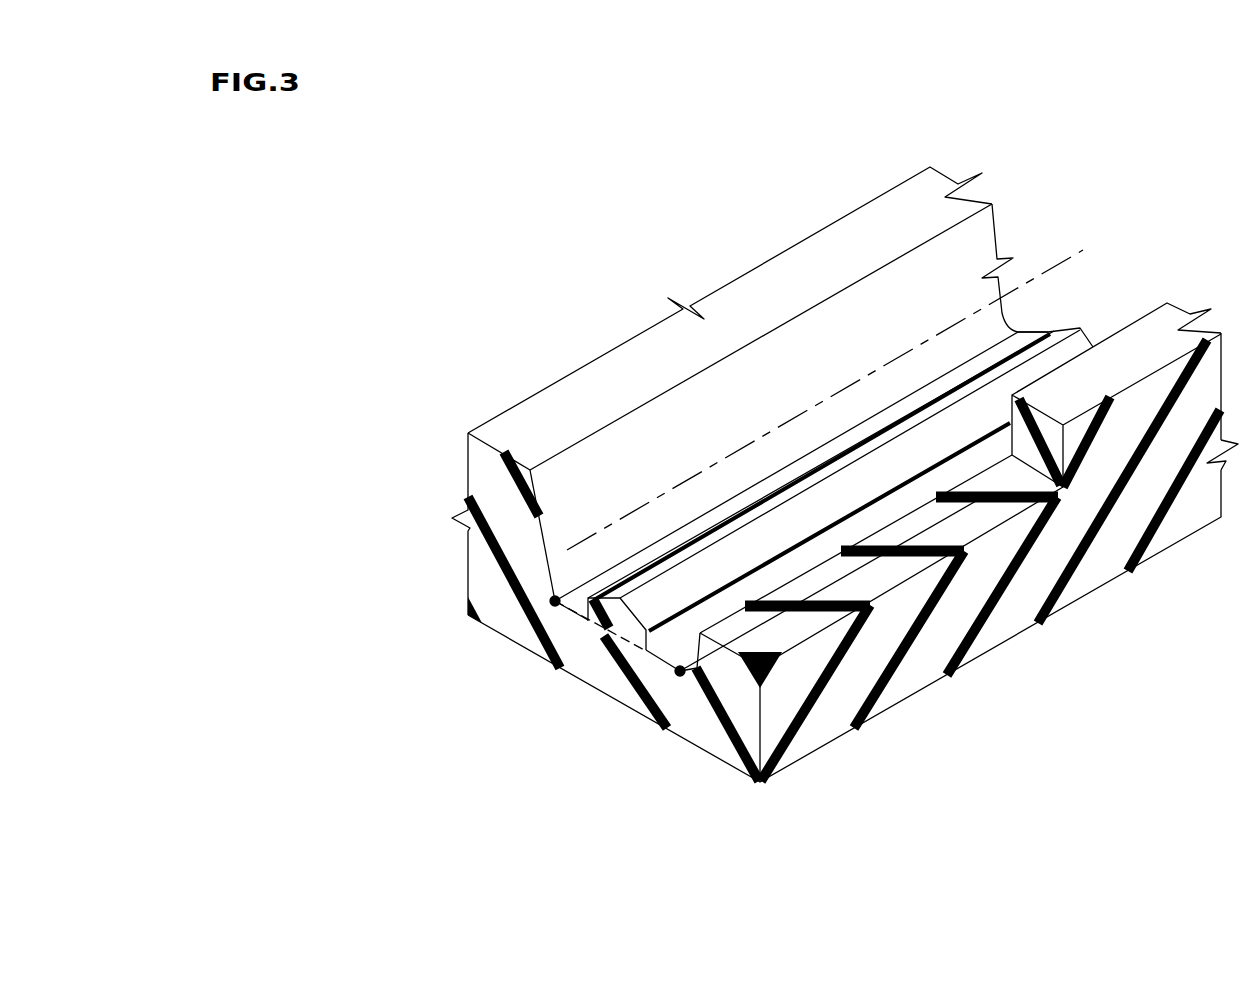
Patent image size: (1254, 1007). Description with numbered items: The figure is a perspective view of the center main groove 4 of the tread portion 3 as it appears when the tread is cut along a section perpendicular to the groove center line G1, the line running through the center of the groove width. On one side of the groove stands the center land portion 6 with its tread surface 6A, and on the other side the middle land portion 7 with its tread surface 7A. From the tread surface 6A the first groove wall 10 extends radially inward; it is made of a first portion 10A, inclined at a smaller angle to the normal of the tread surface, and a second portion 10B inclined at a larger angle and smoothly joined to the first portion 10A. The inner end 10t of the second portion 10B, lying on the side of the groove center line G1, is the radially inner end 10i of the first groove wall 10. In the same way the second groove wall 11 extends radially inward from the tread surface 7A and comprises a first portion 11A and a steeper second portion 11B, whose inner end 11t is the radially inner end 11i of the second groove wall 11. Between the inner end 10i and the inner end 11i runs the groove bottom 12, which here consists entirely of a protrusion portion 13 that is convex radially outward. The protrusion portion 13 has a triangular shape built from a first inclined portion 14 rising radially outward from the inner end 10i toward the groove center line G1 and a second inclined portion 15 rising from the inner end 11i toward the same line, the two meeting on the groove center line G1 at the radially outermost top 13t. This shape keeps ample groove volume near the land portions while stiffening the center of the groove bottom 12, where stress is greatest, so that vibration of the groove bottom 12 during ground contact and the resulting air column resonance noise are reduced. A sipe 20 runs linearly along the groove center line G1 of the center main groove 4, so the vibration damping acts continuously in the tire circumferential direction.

The tread portion 3 is at (904, 274).
The center main groove 4 is at (838, 350).
The groove center line G1 is at (787, 418).
The middle land portion 7 is at (722, 391).
The tread surface of the middle land portion 7A is at (618, 380).
The second groove wall 11 is at (644, 454).
The first portion of the second groove wall 11A is at (533, 507).
The second portion of the second groove wall 11B is at (543, 593).
The radially inner end of the second groove wall 11i is at (683, 454).
The inner end of the second portion 11t is at (761, 337).
The groove bottom 12 is at (756, 575).
The protrusion portion 13 is at (756, 575).
The radially outermost top of the protrusion portion 13t is at (1030, 357).
The first inclined portion 14 is at (675, 640).
The second inclined portion 15 is at (578, 604).
The sipe 20 is at (963, 434).
The first groove wall 10 is at (832, 642).
The first portion of the first groove wall 10A is at (1005, 443).
The second portion of the first groove wall 10B is at (690, 662).
The radially inner end of the first groove wall 10i is at (798, 646).
The inner end of the second portion 10t is at (856, 544).
The center land portion 6 is at (1127, 499).
The tread surface of the center land portion 6A is at (1087, 383).